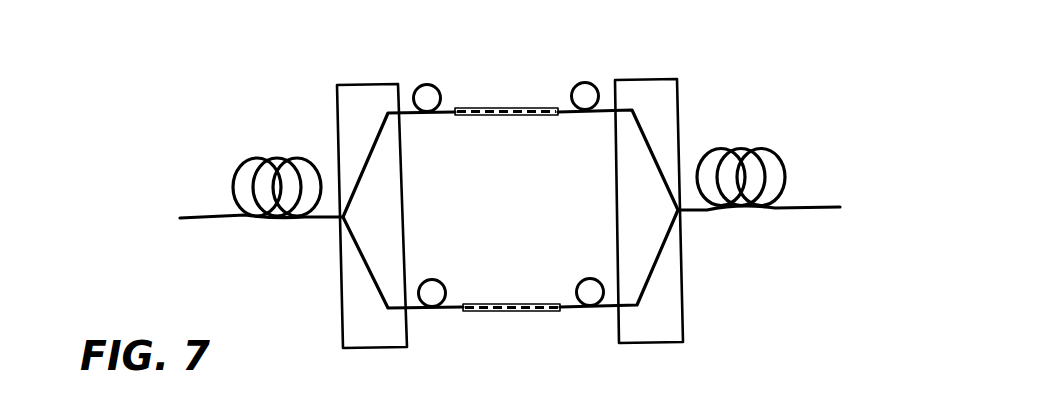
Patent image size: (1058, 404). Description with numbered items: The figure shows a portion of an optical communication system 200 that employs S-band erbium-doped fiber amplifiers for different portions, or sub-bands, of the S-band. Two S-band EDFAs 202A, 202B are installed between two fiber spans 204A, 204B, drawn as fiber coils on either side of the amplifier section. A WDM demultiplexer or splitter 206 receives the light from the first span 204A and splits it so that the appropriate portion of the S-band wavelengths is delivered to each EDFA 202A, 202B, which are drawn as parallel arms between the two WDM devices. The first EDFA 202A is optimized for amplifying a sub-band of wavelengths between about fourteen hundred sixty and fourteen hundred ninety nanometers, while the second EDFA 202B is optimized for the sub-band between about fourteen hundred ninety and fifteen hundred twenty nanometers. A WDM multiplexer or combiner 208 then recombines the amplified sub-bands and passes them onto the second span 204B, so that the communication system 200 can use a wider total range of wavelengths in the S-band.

The optical communication system 200 is at (150, 91).
The S-band EDFA 202A is at (505, 108).
The S-band EDFA 202B is at (503, 306).
The span 204A is at (258, 122).
The span 204B is at (802, 116).
The WDM demultiplexer or splitter 206 is at (338, 252).
The WDM multiplexer or combiner 208 is at (685, 285).